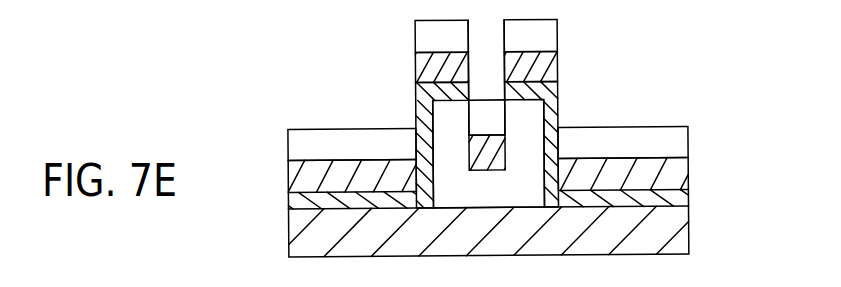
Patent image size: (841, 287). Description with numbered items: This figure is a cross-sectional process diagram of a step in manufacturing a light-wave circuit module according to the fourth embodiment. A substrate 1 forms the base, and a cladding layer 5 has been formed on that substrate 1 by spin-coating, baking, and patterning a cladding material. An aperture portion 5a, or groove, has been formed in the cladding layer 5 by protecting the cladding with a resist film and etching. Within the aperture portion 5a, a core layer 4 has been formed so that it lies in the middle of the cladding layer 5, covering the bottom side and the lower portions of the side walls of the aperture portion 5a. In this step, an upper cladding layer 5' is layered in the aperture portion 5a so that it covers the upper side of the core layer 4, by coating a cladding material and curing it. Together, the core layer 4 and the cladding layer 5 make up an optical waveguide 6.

The substrate 1 is at (660, 231).
The core layer 4 is at (498, 134).
The cladding layer 5 is at (541, 142).
The upper cladding layer 5' is at (563, 67).
The aperture portion 5a is at (467, 121).
The optical waveguide 6 is at (429, 148).